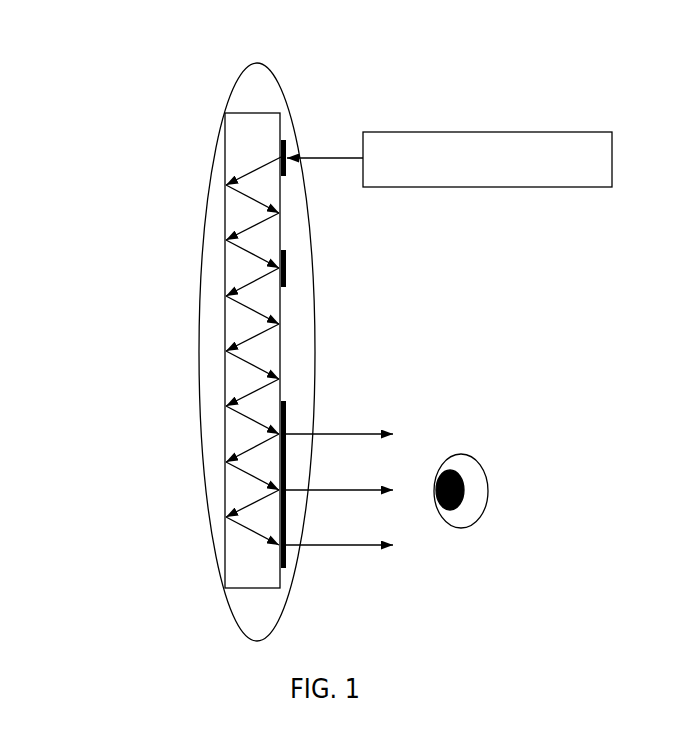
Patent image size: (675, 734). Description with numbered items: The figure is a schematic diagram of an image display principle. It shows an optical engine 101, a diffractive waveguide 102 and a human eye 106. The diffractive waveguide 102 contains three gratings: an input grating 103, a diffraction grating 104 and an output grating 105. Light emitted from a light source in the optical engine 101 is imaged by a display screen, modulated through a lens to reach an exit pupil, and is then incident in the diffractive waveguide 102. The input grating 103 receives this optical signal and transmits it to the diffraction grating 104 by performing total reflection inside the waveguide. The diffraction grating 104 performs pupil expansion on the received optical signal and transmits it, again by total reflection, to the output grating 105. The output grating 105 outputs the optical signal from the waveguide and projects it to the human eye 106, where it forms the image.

The optical engine 101 is at (449, 159).
The diffractive waveguide 102 is at (175, 352).
The input grating 103 is at (393, 128).
The diffraction grating 104 is at (420, 246).
The output grating 105 is at (360, 445).
The human eye 106 is at (523, 465).